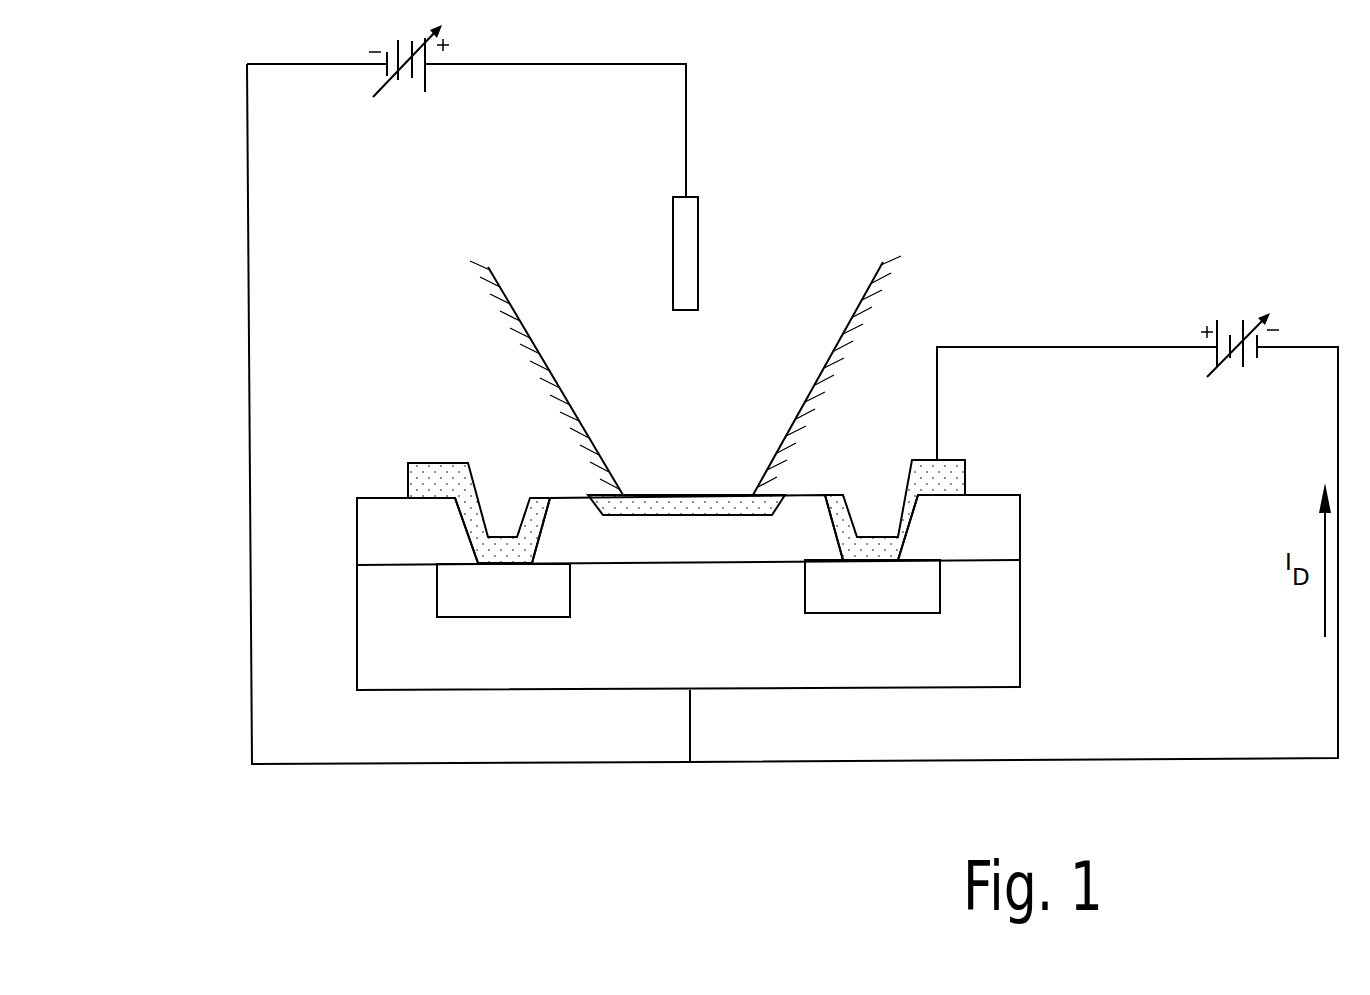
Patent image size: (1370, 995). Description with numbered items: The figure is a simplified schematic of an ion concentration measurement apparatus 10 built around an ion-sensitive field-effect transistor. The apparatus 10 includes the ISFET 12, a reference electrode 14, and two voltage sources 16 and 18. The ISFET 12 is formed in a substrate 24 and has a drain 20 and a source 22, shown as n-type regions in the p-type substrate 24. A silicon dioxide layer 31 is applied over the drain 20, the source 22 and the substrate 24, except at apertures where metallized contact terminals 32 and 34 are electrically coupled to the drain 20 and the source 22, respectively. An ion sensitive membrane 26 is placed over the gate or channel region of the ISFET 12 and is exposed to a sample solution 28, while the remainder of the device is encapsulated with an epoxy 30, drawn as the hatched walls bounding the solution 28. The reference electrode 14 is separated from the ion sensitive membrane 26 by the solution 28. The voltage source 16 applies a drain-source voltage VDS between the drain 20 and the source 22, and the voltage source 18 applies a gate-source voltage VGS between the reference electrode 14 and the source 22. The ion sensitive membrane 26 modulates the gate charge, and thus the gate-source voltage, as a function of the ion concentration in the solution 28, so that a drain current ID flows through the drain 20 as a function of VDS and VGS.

The ion concentration measurement apparatus 10 is at (982, 182).
The ISFET 12 is at (729, 588).
The reference electrode 14 is at (698, 221).
The voltage source 16 is at (1245, 325).
The voltage source 18 is at (427, 78).
The drain 20 is at (847, 615).
The source 22 is at (472, 618).
The substrate 24 is at (720, 692).
The ion sensitive membrane 26 is at (695, 494).
The sample solution 28 is at (683, 406).
The epoxy 30 is at (840, 340).
The silicon dioxide layer 31 is at (1020, 520).
The metallized contact terminal 32 is at (967, 472).
The metallized contact terminal 34 is at (408, 470).